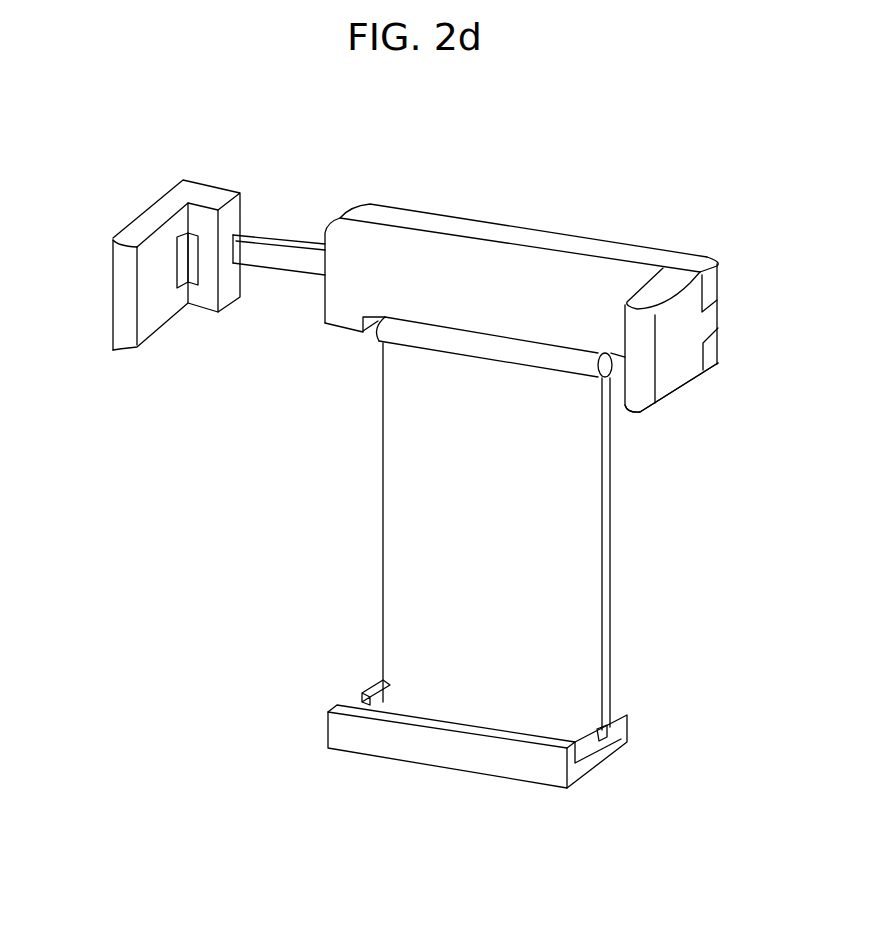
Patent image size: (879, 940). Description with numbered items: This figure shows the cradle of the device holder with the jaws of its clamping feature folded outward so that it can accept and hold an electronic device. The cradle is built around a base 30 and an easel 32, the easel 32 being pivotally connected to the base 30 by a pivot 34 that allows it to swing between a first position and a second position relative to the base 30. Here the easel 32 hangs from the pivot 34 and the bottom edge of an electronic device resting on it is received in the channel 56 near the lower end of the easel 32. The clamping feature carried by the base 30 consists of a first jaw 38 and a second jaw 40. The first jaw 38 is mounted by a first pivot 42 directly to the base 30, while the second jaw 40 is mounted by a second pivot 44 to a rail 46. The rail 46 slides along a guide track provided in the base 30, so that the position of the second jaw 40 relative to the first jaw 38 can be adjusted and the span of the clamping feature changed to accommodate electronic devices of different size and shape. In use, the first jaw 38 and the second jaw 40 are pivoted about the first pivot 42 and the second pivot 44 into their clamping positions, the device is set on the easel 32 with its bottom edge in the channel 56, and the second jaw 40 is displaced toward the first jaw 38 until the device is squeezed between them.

The base 30 is at (520, 243).
The easel 32 is at (614, 573).
The pivot 34 is at (423, 342).
The first jaw 38 is at (682, 372).
The second jaw 40 is at (120, 313).
The first pivot 42 is at (717, 317).
The second pivot 44 is at (190, 272).
The rail 46 is at (283, 240).
The channel 56 is at (420, 713).